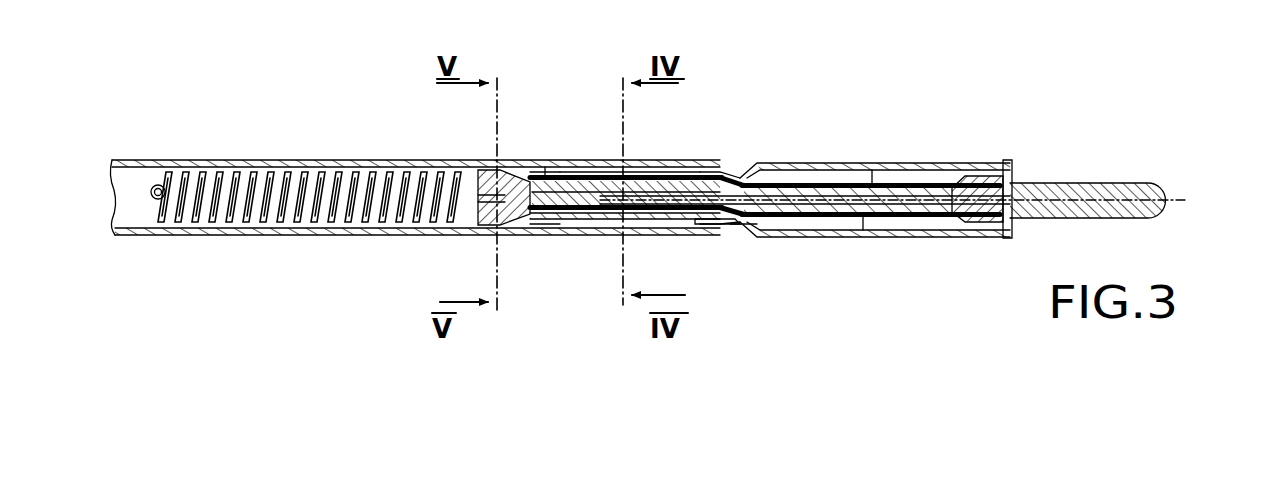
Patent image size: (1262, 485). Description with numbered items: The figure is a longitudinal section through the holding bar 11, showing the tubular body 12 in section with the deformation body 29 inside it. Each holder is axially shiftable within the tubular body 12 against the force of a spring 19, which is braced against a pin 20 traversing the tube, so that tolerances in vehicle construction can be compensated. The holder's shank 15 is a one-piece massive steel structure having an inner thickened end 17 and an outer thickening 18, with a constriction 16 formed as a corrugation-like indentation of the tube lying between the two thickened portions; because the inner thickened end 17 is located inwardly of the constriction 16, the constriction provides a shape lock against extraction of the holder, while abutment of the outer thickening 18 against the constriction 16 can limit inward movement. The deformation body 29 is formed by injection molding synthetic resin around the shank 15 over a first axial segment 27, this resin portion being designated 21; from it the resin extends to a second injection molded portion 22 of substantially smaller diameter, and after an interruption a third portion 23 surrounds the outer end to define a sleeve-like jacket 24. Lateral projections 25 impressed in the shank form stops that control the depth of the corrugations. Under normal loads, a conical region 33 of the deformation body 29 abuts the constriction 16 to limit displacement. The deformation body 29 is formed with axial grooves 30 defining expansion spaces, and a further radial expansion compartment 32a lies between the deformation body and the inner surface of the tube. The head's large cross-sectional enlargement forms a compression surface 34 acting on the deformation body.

The holding bar 11 is at (306, 150).
The tubular body 12 is at (292, 236).
The shank 15 is at (1125, 215).
The constriction 16 is at (735, 233).
The inner thickened end 17 is at (482, 228).
The outer thickening 18 is at (993, 168).
The spring 19 is at (255, 168).
The pin 20 is at (158, 184).
The first injection molded portion 21 is at (585, 215).
The second injection molded portion 22 is at (818, 180).
The third injection molded portion 23 is at (918, 180).
The sleeve-like jacket 24 is at (967, 170).
The lateral projections 25 is at (877, 166).
The first axial segment 27 is at (652, 185).
The deformation body 29 is at (600, 164).
The axial grooves 30 is at (716, 183).
The radial expansion compartment 32a is at (560, 165).
The conical region 33 is at (703, 232).
The compression surface 34 is at (537, 172).